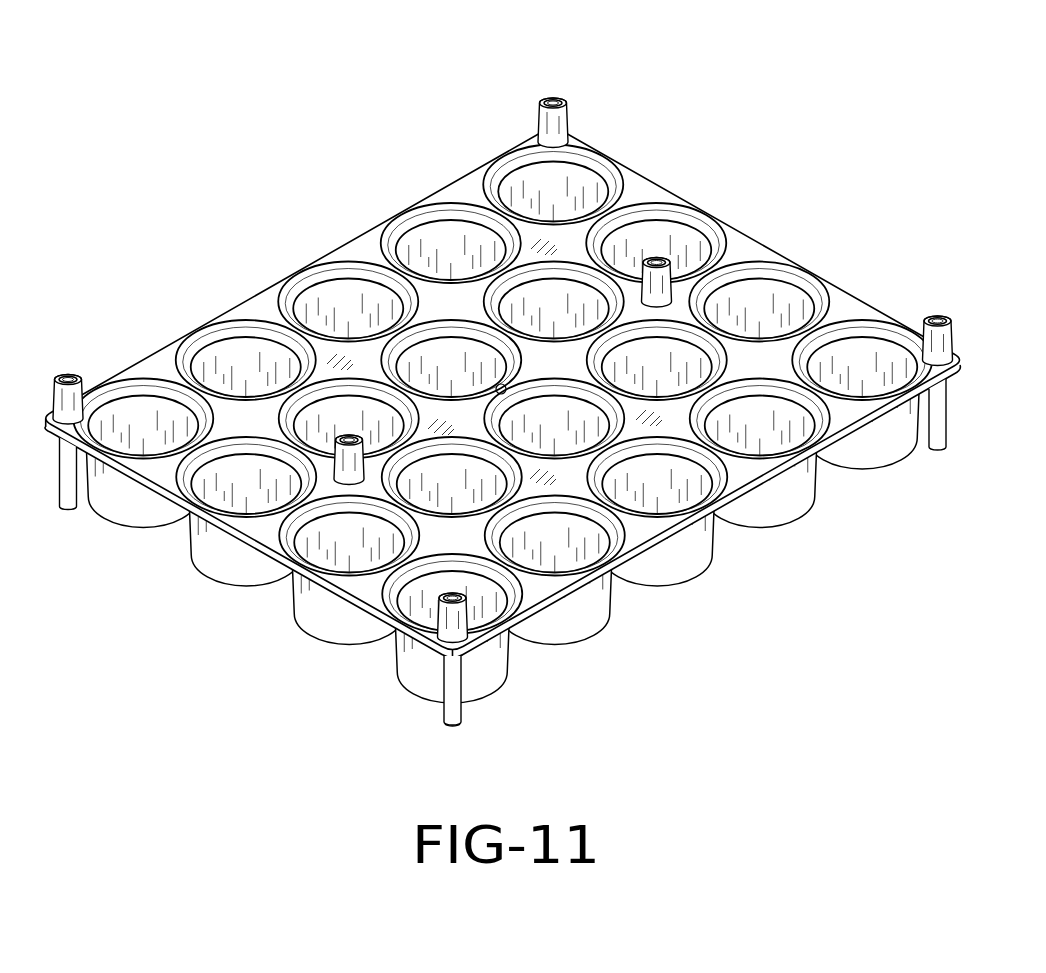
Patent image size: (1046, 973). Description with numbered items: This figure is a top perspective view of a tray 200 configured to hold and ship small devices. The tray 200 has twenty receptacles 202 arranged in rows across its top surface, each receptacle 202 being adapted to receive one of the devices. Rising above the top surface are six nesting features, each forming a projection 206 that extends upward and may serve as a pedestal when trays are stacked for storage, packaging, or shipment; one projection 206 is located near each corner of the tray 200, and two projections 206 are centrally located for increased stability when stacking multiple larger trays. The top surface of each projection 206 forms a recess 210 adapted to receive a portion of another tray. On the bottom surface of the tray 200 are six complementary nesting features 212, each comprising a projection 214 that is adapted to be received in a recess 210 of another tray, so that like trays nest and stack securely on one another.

The tray 200 is at (322, 115).
The receptacle 202 is at (240, 320).
The projection 206 is at (569, 114).
The recess 210 is at (545, 101).
The complementary nesting feature 212 is at (452, 729).
The projection 214 is at (441, 727).